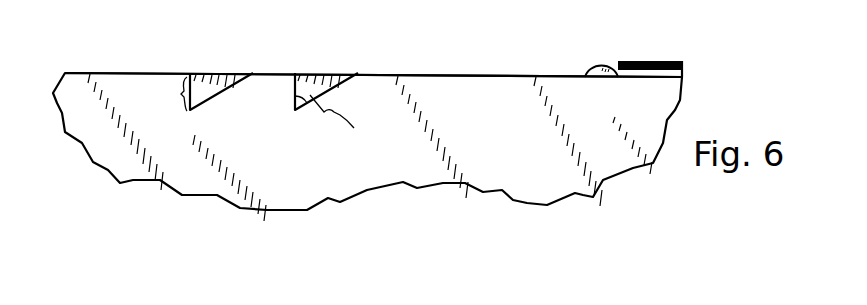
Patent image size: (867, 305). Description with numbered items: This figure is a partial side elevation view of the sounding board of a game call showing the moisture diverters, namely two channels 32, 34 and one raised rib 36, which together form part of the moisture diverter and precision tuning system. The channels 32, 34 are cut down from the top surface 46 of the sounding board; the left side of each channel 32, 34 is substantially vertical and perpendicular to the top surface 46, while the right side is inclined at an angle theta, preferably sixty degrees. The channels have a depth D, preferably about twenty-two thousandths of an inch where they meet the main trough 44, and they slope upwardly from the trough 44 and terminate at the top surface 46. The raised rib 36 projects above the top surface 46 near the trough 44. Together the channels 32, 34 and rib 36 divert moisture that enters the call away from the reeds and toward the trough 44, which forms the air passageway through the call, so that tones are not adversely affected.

The channel 32 is at (225, 73).
The channel 34 is at (338, 73).
The raised rib 36 is at (597, 62).
The main trough 44 is at (518, 139).
The top surface 46 is at (462, 73).